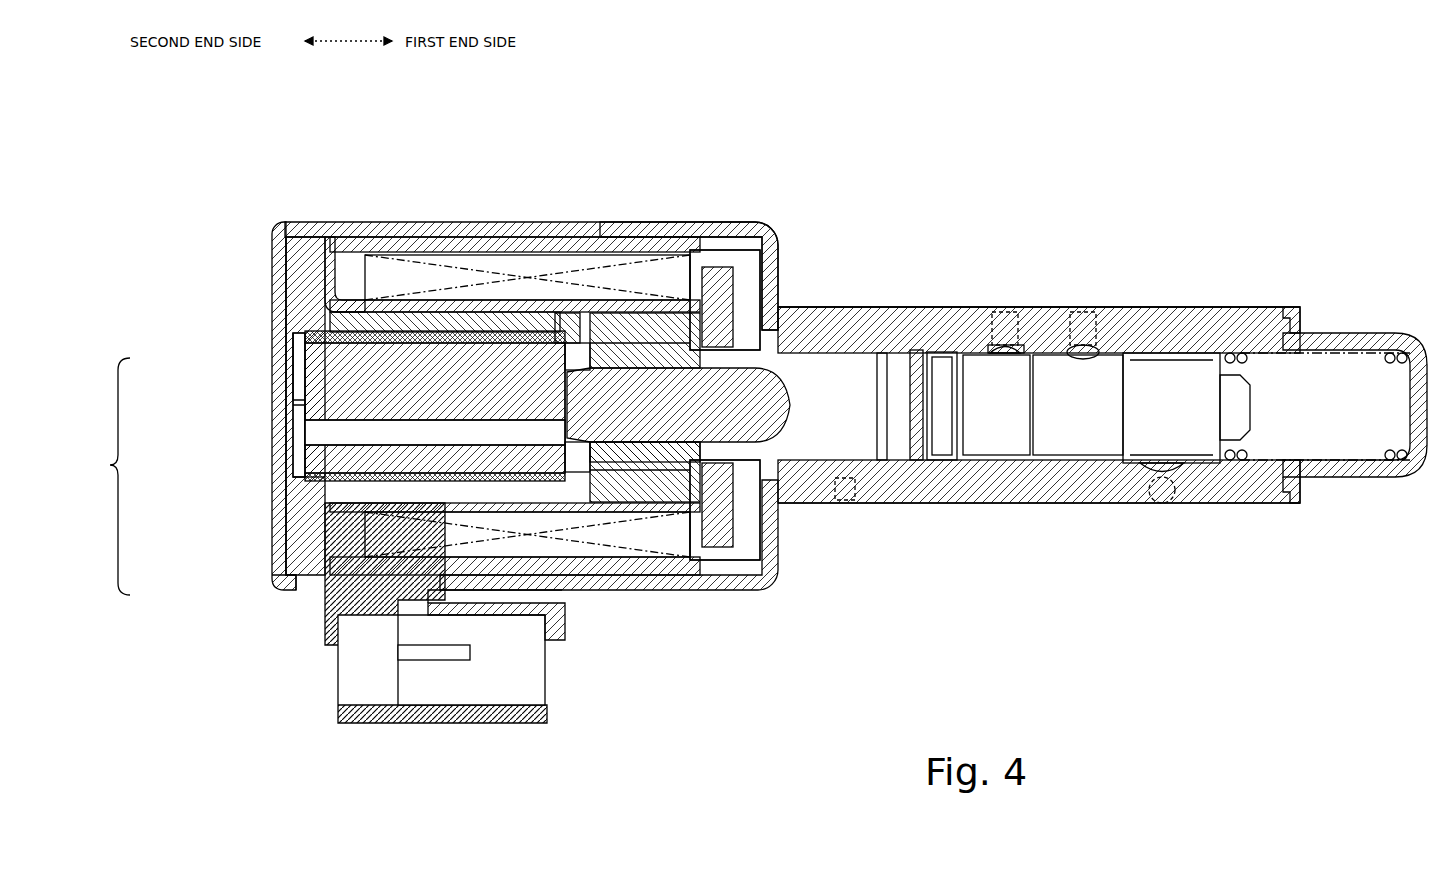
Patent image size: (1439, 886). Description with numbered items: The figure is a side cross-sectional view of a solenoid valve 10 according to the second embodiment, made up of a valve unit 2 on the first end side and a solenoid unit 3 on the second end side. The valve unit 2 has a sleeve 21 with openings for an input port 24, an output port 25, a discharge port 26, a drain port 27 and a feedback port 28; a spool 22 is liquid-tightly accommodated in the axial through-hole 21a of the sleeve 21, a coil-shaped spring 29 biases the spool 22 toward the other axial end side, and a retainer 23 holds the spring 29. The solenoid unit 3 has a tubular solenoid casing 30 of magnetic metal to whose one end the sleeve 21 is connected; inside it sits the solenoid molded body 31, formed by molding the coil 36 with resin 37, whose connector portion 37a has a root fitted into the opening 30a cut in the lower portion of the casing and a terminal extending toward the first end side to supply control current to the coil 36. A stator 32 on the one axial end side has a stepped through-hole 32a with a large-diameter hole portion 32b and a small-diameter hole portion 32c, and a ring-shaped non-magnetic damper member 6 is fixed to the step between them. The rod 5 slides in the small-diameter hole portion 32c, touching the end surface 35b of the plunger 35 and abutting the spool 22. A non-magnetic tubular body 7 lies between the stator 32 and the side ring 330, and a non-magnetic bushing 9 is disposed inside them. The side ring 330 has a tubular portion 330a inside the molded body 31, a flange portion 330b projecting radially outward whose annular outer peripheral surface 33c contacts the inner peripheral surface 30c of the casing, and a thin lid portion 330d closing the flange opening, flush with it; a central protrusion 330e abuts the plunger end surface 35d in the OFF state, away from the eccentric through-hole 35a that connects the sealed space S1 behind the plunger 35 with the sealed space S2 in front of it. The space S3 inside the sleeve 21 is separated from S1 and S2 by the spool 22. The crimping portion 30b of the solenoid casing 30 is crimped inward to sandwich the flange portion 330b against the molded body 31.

The valve unit 2 is at (1246, 277).
The solenoid unit 3 is at (316, 182).
The rod 5 is at (720, 470).
The damper member 6 is at (655, 470).
The tubular body 7 is at (545, 335).
The bushing 9 is at (300, 330).
The solenoid valve 10 is at (1201, 100).
The sleeve 21 is at (1192, 325).
The through-hole 21a is at (1030, 460).
The spool 22 is at (980, 372).
The retainer 23 is at (1390, 480).
The input port 24 is at (1010, 368).
The output port 25 is at (1085, 350).
The discharge port 26 is at (1165, 500).
The drain port 27 is at (843, 500).
The feedback port 28 is at (935, 455).
The spring 29 is at (1395, 350).
The solenoid casing 30 is at (690, 214).
The opening 30a is at (440, 610).
The crimping portion 30b is at (272, 252).
The inner peripheral surface 30c is at (352, 290).
The solenoid molded body 31 is at (640, 237).
The stator 32 is at (660, 485).
The through-hole 32a is at (632, 138).
The large-diameter hole portion 32b is at (585, 345).
The small-diameter hole portion 32c is at (612, 358).
The annular outer peripheral surface 33c is at (310, 240).
The plunger 35 is at (345, 385).
The through-hole 35a is at (340, 446).
The end surface 35b is at (572, 455).
The end surface 35d is at (300, 345).
The coil 36 is at (412, 278).
The resin 37 is at (432, 320).
The connector portion 37a is at (360, 708).
The side ring 330 is at (94, 476).
The tubular portion 330a is at (300, 500).
The flange portion 330b is at (290, 572).
The lid portion 330d is at (300, 400).
The protrusion 330e is at (300, 415).
The space S1 is at (298, 430).
The space S2 is at (552, 338).
The space S3 is at (1080, 455).